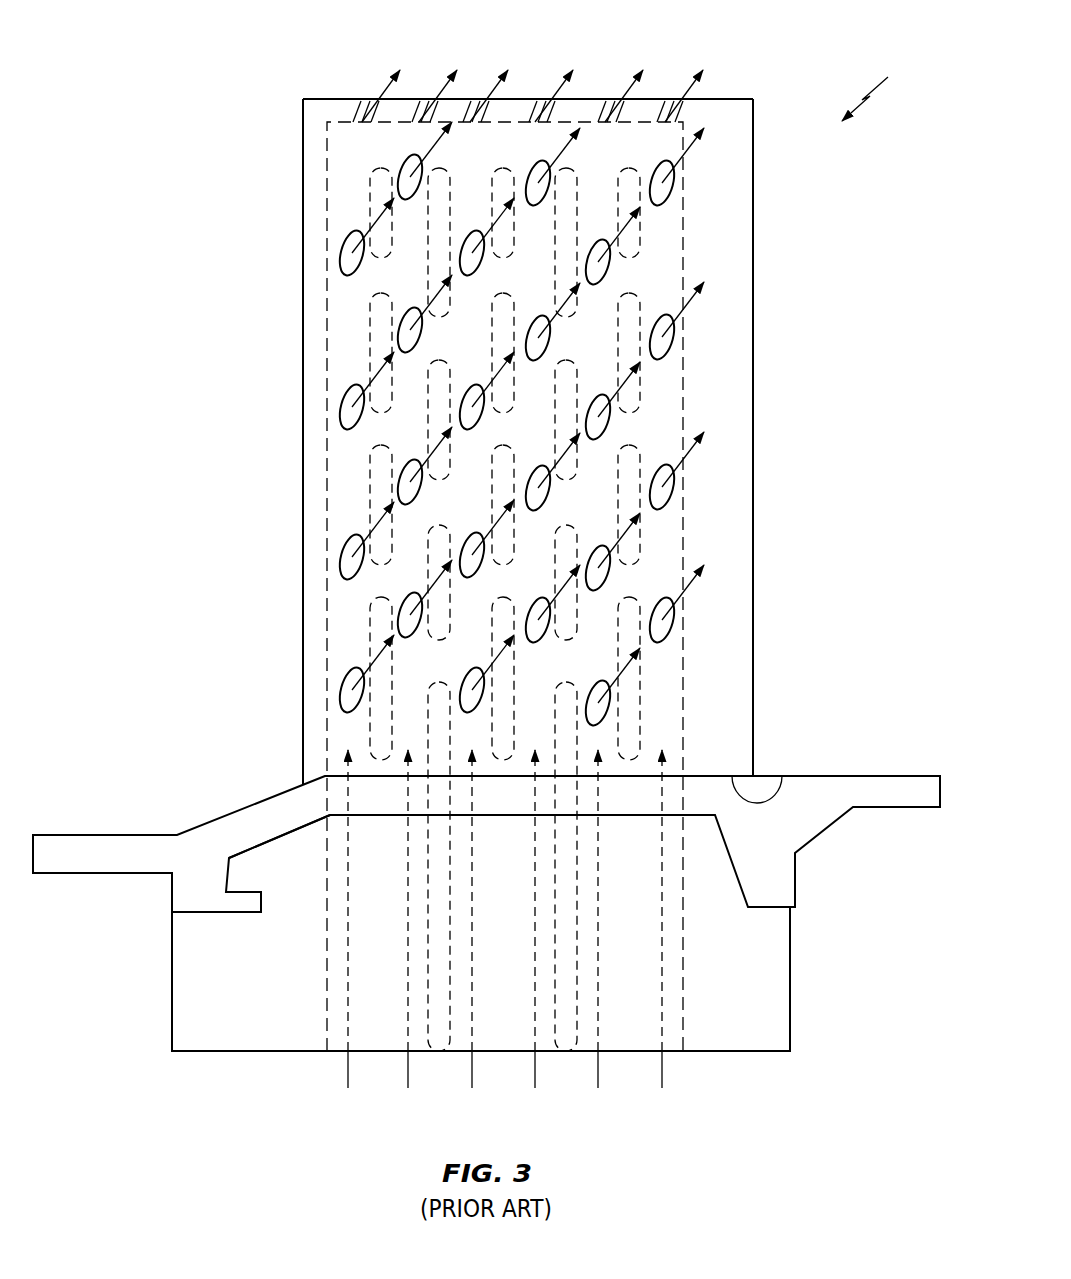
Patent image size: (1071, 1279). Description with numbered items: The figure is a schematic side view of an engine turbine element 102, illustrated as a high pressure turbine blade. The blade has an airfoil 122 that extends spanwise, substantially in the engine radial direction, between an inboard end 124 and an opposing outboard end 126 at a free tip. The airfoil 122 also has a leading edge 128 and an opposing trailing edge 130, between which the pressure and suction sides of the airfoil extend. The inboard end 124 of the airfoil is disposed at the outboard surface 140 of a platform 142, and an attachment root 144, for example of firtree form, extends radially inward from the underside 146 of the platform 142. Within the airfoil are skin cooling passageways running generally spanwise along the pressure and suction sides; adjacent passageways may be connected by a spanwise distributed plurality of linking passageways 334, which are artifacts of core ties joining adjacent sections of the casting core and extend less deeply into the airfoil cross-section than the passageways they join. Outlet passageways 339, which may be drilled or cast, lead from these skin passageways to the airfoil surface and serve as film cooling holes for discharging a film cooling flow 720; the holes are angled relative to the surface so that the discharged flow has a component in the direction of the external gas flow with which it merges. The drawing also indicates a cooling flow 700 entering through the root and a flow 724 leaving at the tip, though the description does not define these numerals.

The engine turbine element 102 is at (486, 557).
The airfoil 122 is at (880, 84).
The inboard end 124 is at (782, 776).
The outboard end 126 is at (340, 98).
The leading edge 128 is at (302, 262).
The trailing edge 130 is at (753, 262).
The outboard surface 140 is at (720, 772).
The platform 142 is at (247, 827).
The attachment root 144 is at (803, 1015).
The underside 146 is at (282, 847).
The linking passageways 334 is at (628, 580).
The outlet passageways 339 is at (545, 158).
The cooling fluid inlet flow 700 is at (347, 1077).
The film cooling flow 720 is at (685, 153).
The tip cooling flow 724 is at (688, 90).